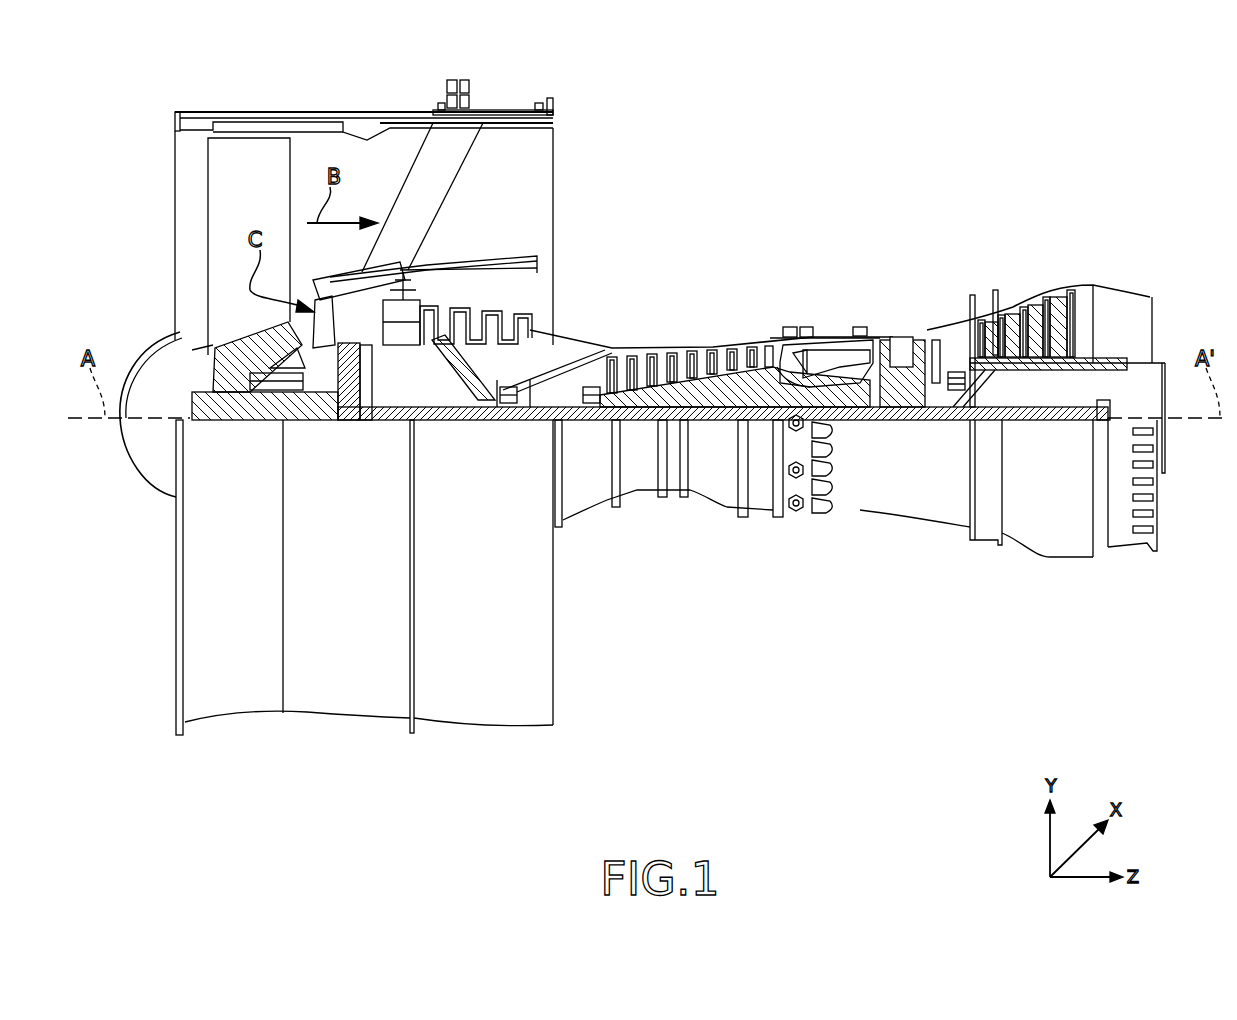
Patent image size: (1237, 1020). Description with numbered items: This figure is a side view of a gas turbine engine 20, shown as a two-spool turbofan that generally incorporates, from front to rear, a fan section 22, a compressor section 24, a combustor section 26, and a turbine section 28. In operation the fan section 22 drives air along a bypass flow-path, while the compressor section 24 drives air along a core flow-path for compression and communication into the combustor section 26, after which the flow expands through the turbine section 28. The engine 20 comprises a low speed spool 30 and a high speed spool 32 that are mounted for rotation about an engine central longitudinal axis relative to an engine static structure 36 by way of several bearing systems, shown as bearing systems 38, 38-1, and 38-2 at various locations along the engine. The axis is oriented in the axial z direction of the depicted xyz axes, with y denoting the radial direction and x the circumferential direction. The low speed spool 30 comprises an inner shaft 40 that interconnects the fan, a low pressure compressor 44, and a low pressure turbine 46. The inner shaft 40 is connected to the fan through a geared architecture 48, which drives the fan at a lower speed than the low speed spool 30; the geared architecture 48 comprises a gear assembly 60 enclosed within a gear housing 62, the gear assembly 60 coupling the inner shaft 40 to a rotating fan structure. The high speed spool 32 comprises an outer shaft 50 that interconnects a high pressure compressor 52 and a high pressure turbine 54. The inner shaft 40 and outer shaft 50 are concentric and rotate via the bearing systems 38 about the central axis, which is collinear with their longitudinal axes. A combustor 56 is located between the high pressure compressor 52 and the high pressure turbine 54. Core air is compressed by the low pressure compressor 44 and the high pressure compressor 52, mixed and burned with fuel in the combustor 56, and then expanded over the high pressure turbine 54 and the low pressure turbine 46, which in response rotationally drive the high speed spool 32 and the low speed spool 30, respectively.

The gas turbine engine 20 is at (888, 104).
The fan section 22 is at (390, 99).
The compressor section 24 is at (413, 219).
The combustor section 26 is at (858, 292).
The turbine section 28 is at (1026, 325).
The low speed spool 30 is at (722, 447).
The high speed spool 32 is at (765, 358).
The engine static structure 36 is at (1017, 520).
The bearing system 38 is at (950, 420).
The bearing system 38-1 is at (260, 423).
The bearing system 38-2 is at (510, 423).
The inner shaft 40 is at (650, 420).
The low pressure compressor 44 is at (487, 320).
The low pressure turbine 46 is at (1038, 319).
The geared architecture 48 is at (362, 445).
The outer shaft 50 is at (853, 420).
The high pressure compressor 52 is at (713, 350).
The high pressure turbine 54 is at (892, 340).
The combustor 56 is at (840, 353).
The gear assembly 60 is at (383, 378).
The gear housing 62 is at (383, 355).